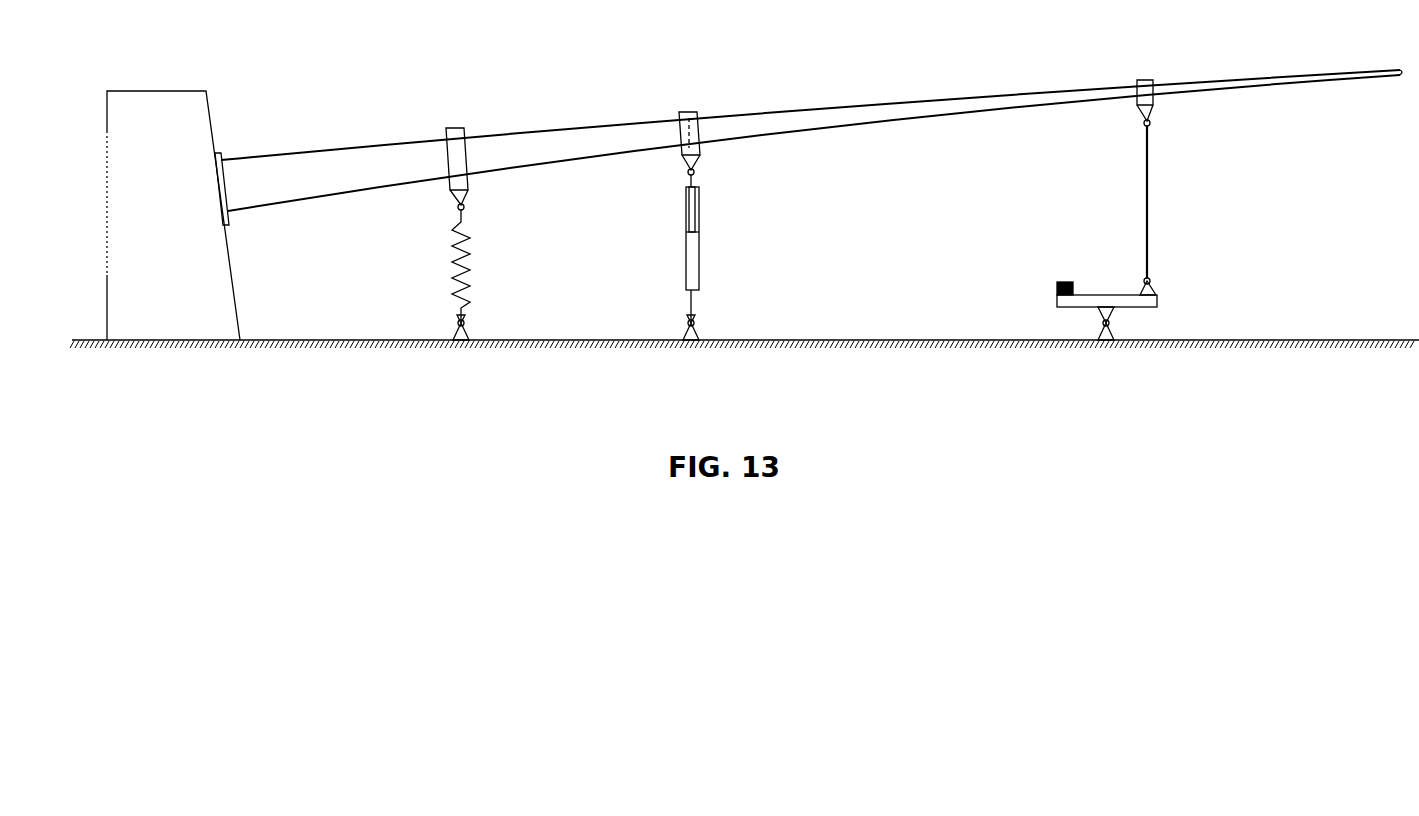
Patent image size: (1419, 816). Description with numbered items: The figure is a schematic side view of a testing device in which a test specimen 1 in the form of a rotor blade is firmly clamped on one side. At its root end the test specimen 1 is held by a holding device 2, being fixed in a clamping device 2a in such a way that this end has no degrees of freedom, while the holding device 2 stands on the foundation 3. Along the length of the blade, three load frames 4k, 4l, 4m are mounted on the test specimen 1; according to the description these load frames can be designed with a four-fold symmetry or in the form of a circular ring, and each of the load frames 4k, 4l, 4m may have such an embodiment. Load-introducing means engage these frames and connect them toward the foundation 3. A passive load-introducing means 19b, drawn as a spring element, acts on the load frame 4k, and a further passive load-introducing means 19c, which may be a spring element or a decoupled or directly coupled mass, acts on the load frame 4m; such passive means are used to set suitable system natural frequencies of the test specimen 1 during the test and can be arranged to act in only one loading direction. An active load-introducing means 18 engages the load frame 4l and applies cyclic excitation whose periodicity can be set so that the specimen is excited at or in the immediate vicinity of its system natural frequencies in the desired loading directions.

The test specimen 1 is at (791, 110).
The holding device 2 is at (176, 91).
The clamping device 2a is at (222, 156).
The foundation 3 is at (318, 340).
The load frame 4k is at (453, 128).
The load frame 4l is at (689, 112).
The load frame 4m is at (1145, 80).
The active load-introducing means 18 is at (703, 250).
The passive load-introducing means 19b is at (472, 264).
The passive load-introducing means 19c is at (1153, 201).